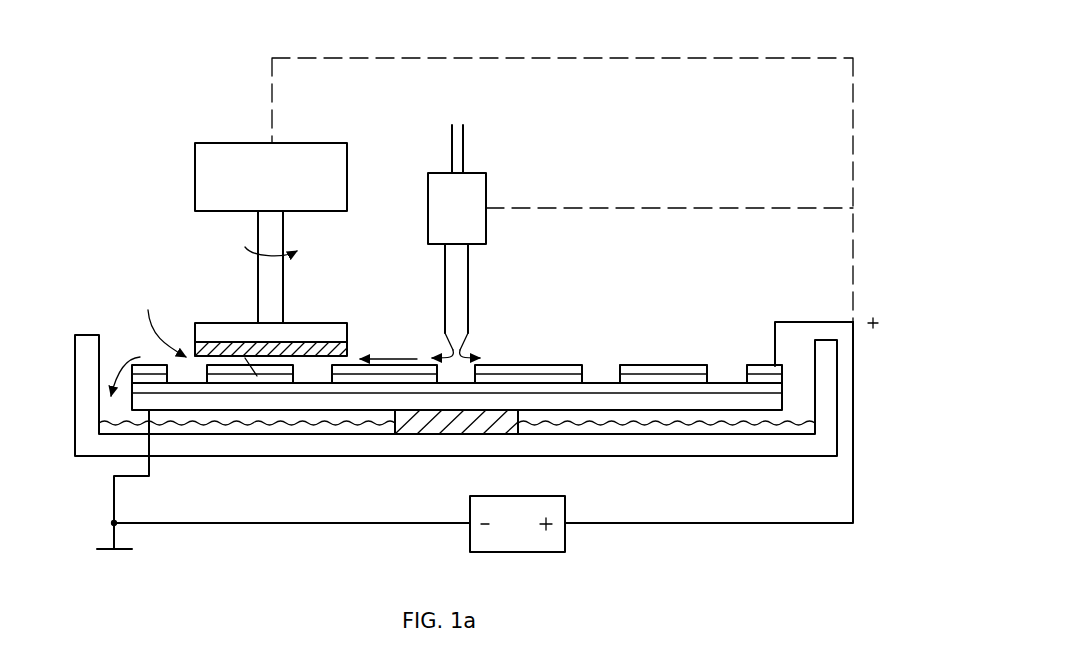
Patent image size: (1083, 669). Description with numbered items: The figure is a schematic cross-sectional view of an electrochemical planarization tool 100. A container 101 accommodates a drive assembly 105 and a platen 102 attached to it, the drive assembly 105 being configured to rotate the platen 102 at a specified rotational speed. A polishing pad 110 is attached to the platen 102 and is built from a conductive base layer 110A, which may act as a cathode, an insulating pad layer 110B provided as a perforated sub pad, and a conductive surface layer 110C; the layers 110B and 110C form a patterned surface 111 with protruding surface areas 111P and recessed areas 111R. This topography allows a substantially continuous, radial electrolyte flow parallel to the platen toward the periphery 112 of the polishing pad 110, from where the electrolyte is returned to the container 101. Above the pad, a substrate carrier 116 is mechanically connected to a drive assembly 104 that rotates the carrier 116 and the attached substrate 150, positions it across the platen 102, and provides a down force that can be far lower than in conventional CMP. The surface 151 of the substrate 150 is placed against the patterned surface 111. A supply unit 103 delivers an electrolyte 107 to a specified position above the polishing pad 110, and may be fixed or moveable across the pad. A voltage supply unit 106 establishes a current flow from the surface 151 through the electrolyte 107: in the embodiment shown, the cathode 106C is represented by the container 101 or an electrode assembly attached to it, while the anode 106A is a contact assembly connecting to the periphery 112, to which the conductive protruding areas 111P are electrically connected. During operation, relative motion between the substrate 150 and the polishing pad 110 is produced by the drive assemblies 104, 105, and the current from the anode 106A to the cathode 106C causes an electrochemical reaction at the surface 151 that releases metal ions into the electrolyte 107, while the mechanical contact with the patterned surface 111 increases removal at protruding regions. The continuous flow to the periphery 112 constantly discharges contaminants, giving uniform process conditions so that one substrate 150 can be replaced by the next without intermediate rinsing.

The electrochemical planarization tool 100 is at (875, 61).
The container 101 is at (838, 453).
The platen 102 is at (783, 405).
The supply unit 103 is at (497, 241).
The drive assembly 104 is at (291, 189).
The drive assembly 105 is at (429, 440).
The voltage supply unit 106 is at (545, 553).
The anode 106A is at (778, 356).
The cathode 106C is at (114, 494).
The electrolyte 107 is at (470, 351).
The polishing pad 110 is at (701, 360).
The conductive base layer 110A is at (783, 390).
The insulating pad layer 110B is at (783, 378).
The conductive surface layer 110C is at (783, 367).
The patterned surface 111 is at (553, 361).
The recessed areas 111R is at (599, 376).
The protruding surface areas 111P is at (656, 361).
The periphery 112 is at (788, 360).
The substrate carrier 116 is at (322, 320).
The substrate 150 is at (264, 340).
The surface 151 is at (245, 358).